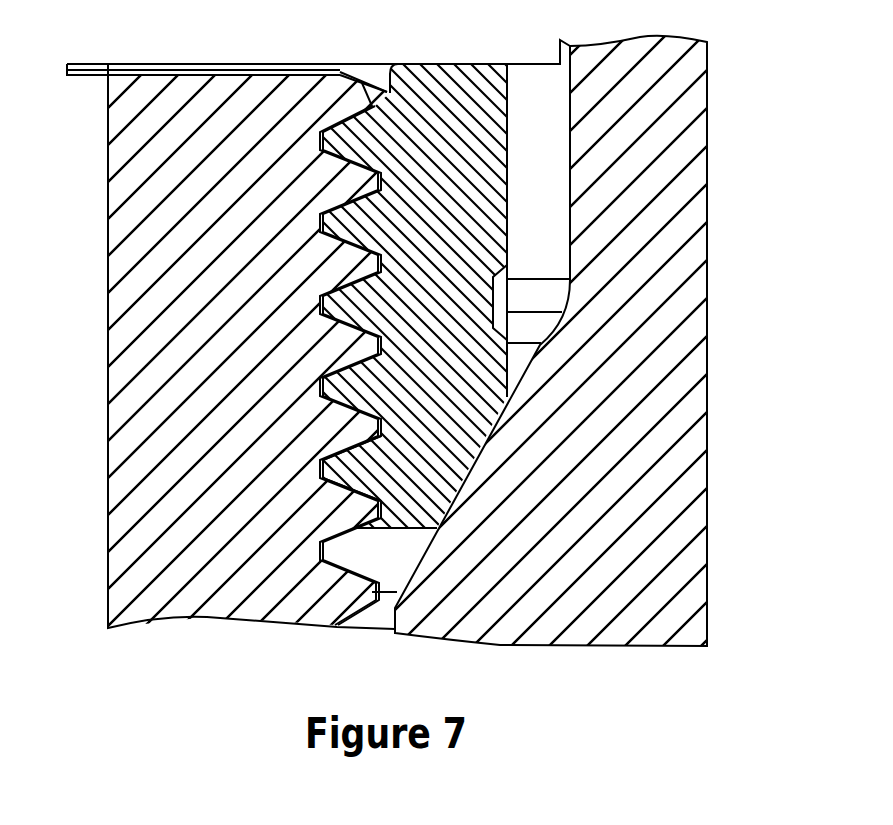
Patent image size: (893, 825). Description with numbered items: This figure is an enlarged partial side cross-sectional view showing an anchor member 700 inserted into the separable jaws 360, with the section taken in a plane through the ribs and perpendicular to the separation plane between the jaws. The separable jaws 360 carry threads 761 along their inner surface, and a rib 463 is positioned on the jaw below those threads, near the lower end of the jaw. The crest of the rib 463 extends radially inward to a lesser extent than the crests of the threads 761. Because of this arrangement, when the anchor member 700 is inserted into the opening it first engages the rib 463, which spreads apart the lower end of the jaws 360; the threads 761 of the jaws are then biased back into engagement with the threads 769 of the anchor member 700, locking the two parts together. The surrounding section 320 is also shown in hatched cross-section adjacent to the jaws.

The anchor member 700 is at (233, 96).
The separable jaws 360 is at (450, 92).
The housing 320 is at (692, 173).
The threads of the anchor member 769 is at (353, 353).
The threads of the separable jaws 761 is at (358, 387).
The rib 463 is at (340, 478).